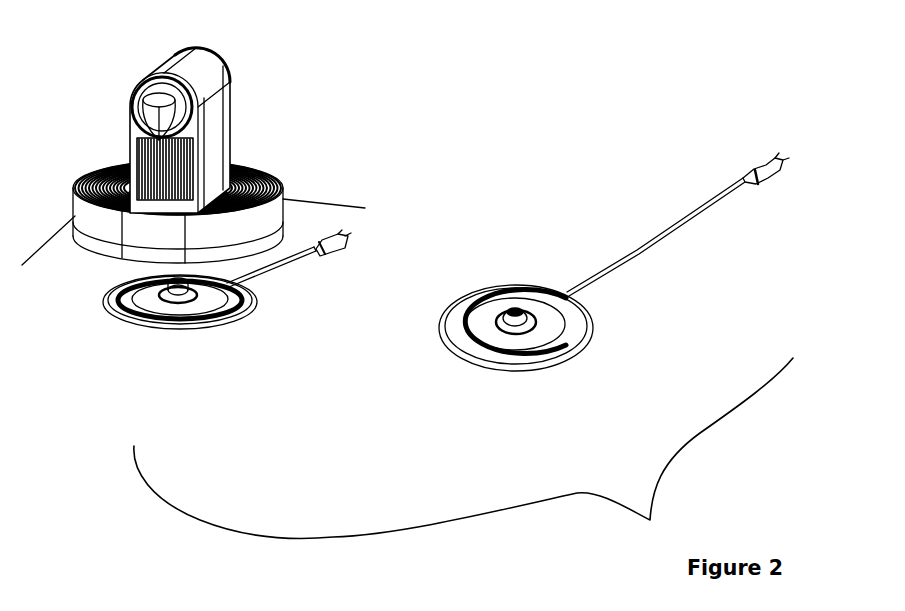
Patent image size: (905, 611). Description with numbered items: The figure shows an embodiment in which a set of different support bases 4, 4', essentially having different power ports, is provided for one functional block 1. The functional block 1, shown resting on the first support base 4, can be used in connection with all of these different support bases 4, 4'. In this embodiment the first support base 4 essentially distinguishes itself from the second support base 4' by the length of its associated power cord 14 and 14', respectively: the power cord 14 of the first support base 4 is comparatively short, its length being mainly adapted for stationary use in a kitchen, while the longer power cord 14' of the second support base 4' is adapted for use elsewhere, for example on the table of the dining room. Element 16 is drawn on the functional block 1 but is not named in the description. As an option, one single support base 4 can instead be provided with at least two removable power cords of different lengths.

The functional block 1 is at (118, 121).
The machine housing 16 is at (255, 93).
The first support base 4 is at (180, 327).
The power cord 14 is at (293, 268).
The second support base 4' is at (535, 345).
The longer power cord 14' is at (678, 224).